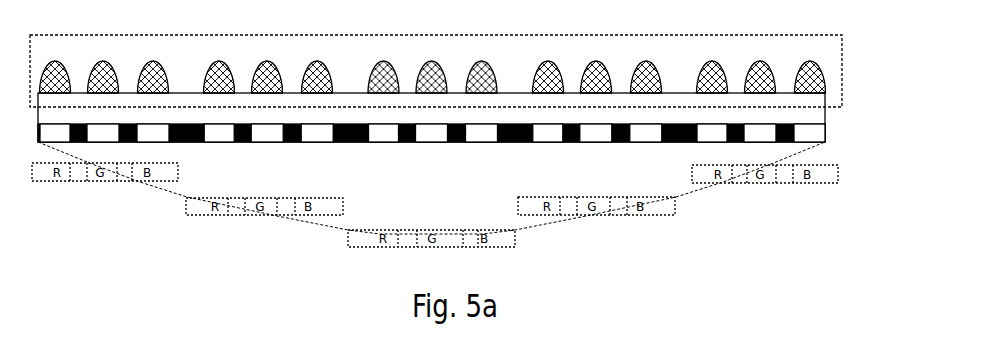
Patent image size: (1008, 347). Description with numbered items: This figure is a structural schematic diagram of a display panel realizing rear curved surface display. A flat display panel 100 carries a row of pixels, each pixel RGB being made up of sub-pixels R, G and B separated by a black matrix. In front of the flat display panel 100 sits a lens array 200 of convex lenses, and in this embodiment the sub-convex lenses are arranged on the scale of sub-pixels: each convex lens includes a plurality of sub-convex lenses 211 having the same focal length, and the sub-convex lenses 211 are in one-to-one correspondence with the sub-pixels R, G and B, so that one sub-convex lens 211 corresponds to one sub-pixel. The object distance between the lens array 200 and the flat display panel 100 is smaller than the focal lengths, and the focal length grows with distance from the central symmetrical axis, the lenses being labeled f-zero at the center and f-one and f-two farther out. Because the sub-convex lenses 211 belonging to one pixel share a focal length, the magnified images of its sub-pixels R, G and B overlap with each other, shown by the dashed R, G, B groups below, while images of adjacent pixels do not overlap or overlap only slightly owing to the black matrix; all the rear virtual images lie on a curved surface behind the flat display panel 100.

The flat display panel 100 is at (825, 135).
The lens array 200 is at (463, 59).
The sub-convex lens 211 is at (497, 67).